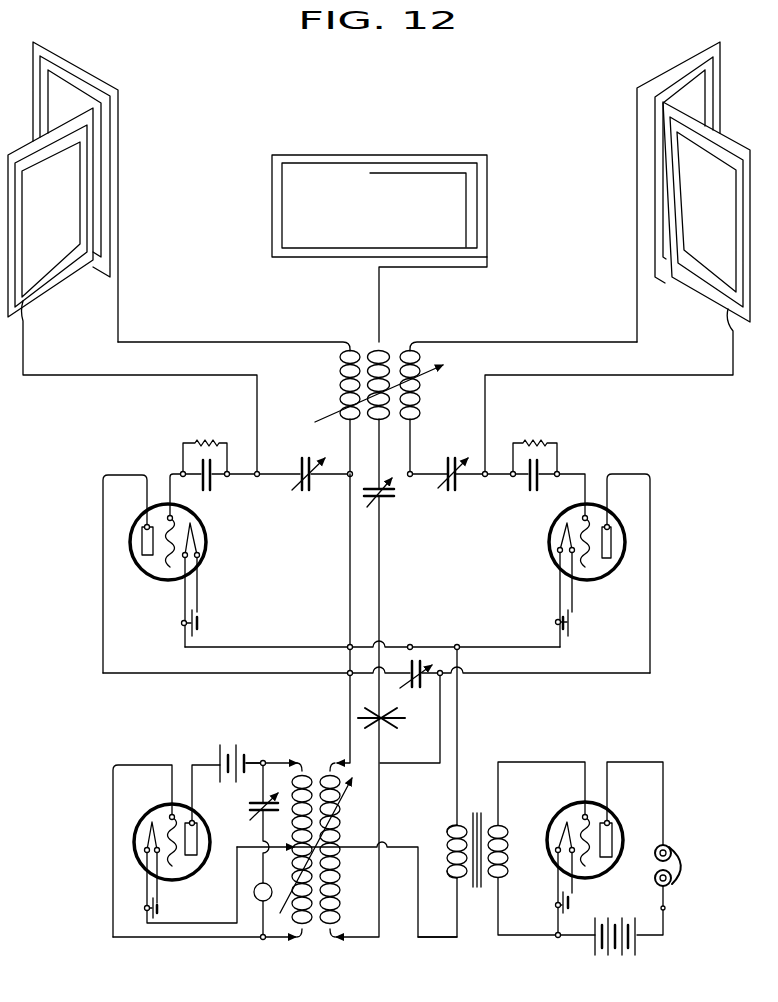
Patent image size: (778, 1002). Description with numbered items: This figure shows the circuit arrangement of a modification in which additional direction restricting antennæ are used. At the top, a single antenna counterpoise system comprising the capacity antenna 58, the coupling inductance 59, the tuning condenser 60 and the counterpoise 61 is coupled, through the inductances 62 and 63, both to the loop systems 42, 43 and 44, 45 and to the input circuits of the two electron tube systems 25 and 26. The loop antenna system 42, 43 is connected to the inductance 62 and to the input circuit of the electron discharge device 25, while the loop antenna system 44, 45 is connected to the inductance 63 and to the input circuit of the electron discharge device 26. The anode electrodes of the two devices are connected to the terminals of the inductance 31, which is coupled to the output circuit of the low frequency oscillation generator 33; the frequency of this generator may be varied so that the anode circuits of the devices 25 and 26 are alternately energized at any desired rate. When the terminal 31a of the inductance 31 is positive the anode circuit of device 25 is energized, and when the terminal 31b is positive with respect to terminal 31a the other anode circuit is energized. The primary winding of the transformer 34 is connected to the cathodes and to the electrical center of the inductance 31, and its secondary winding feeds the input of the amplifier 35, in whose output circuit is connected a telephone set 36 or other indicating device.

The loop antenna system 42 is at (90, 72).
The loop antenna system 43 is at (65, 290).
The loop antenna system 44 is at (645, 78).
The loop antenna system 45 is at (707, 290).
The capacity antenna 58 is at (386, 150).
The coupling inductance 59 is at (377, 394).
The inductance 62 is at (339, 398).
The inductance 63 is at (419, 396).
The tuning condenser 60 is at (395, 502).
The electron discharge device 25 is at (211, 538).
The electron discharge device 26 is at (549, 548).
The counterpoise 61 is at (360, 702).
The inductance 31 is at (347, 856).
The terminal of the inductance 31a is at (332, 761).
The terminal of the inductance 31b is at (330, 941).
The low frequency oscillation generator 33 is at (125, 843).
The transformer 34 is at (475, 808).
The amplifier 35 is at (622, 792).
The telephone set 36 is at (684, 852).